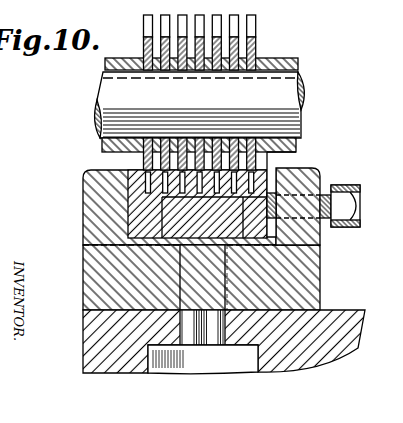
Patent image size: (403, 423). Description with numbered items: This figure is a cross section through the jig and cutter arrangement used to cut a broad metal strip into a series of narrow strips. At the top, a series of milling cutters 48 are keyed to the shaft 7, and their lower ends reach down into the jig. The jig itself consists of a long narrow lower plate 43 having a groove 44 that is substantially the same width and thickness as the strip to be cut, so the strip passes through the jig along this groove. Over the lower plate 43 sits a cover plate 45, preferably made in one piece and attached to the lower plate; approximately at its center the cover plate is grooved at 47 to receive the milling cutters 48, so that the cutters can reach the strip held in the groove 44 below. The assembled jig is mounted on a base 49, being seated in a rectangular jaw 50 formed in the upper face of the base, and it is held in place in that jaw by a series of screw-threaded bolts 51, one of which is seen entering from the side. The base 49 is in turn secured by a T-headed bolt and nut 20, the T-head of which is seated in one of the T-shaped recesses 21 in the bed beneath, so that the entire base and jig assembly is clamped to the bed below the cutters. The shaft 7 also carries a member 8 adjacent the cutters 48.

The shaft 7 is at (307, 82).
The bar 8 is at (297, 58).
The T-headed bolt and nut 20 is at (178, 375).
The T-shaped recess 21 is at (258, 370).
The lower plate 43 is at (296, 155).
The groove 44 is at (145, 190).
The cover plate 45 is at (297, 146).
The groove 47 is at (303, 132).
The milling cutters 48 is at (143, 30).
The base 49 is at (321, 283).
The rectangular jaw 50 is at (300, 227).
The screw-threaded bolts 51 is at (341, 186).